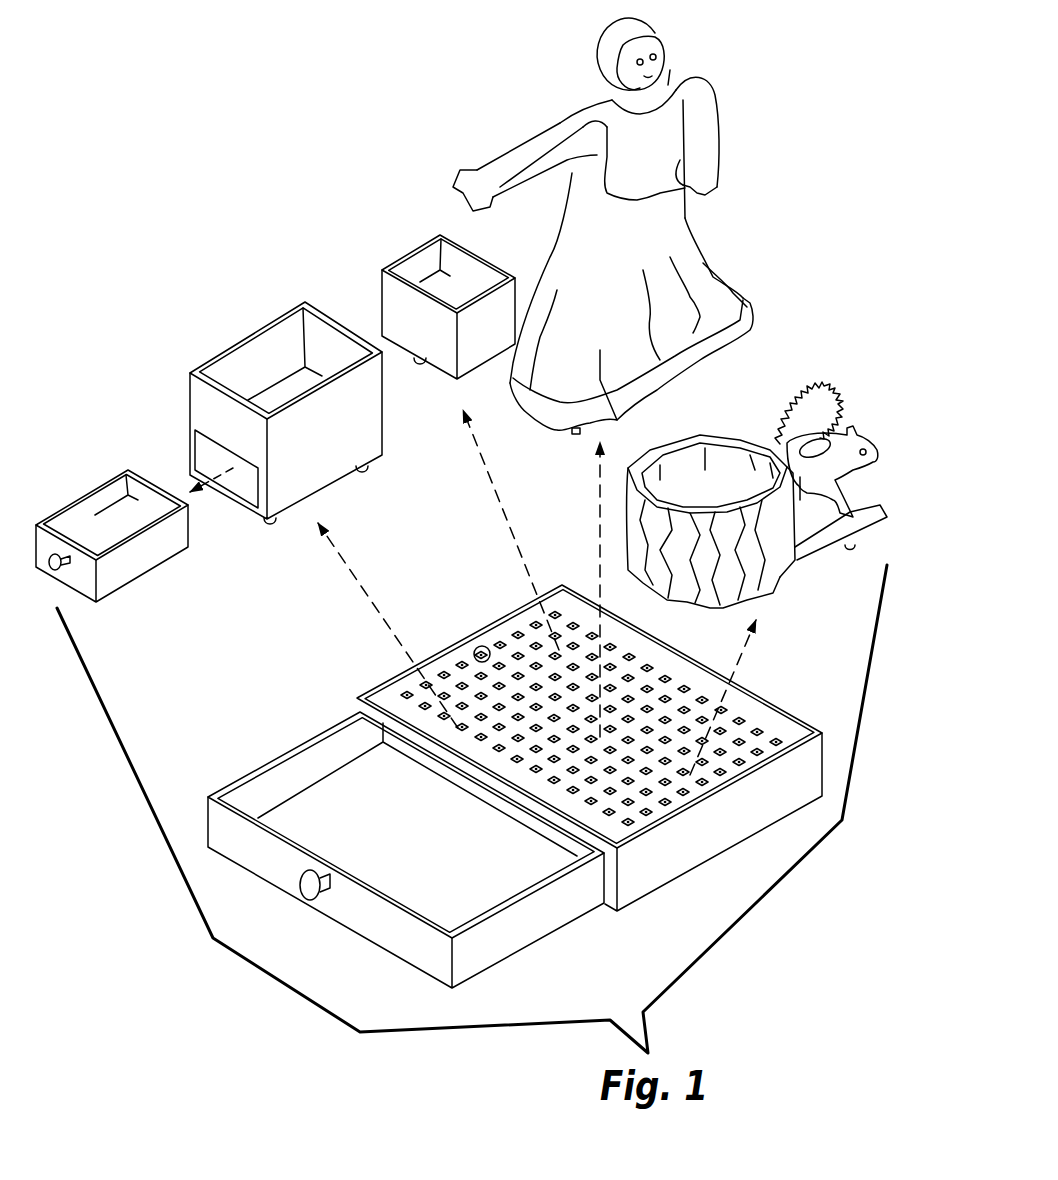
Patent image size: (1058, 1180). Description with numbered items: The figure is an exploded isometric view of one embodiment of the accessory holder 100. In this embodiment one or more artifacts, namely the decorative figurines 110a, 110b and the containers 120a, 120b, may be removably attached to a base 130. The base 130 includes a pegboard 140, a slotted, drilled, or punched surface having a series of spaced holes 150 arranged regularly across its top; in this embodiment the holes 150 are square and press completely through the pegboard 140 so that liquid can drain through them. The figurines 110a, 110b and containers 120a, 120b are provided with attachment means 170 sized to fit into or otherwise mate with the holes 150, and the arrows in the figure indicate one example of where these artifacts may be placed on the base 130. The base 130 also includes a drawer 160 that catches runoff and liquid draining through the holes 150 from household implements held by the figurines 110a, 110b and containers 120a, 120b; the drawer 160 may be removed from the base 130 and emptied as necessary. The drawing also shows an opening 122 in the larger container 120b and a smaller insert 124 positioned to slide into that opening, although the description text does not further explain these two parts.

The accessory holder 100 is at (410, 118).
The decorative figurine 110a is at (700, 140).
The decorative figurine 110b is at (777, 437).
The container 120a is at (387, 267).
The container 120b is at (265, 327).
The opening in box module 122 is at (237, 478).
The drawer insert 124 is at (102, 487).
The base 130 is at (757, 802).
The pegboard 140 is at (742, 705).
The holes 150 is at (474, 648).
The drawer 160 is at (298, 750).
The attachment means 170 is at (362, 474).